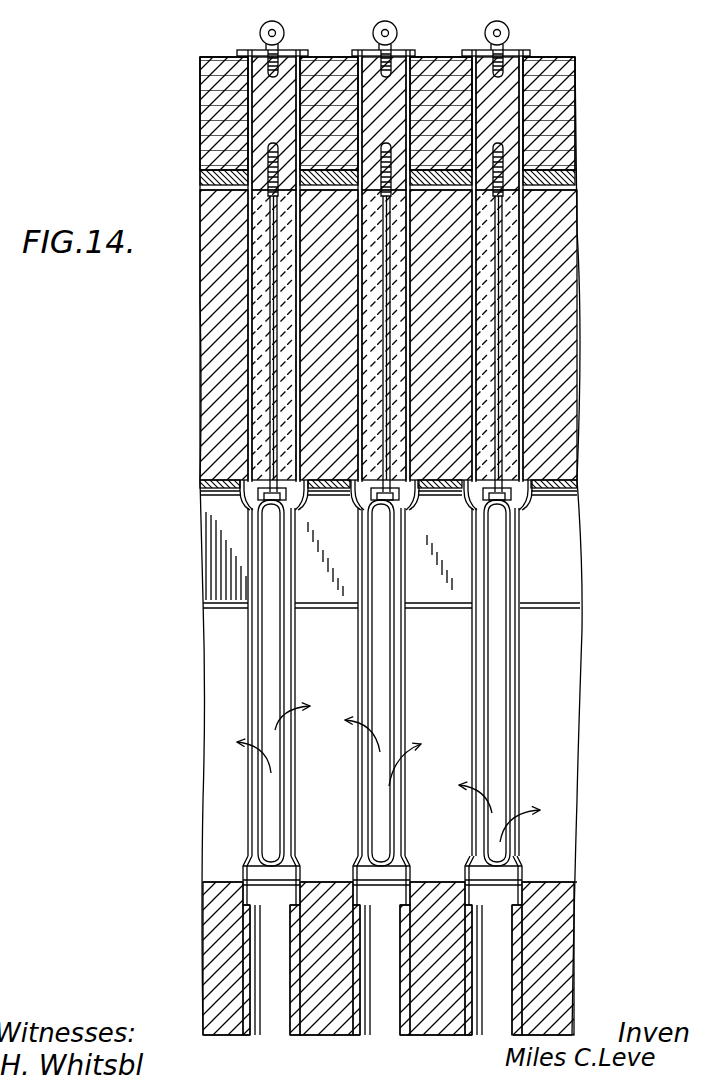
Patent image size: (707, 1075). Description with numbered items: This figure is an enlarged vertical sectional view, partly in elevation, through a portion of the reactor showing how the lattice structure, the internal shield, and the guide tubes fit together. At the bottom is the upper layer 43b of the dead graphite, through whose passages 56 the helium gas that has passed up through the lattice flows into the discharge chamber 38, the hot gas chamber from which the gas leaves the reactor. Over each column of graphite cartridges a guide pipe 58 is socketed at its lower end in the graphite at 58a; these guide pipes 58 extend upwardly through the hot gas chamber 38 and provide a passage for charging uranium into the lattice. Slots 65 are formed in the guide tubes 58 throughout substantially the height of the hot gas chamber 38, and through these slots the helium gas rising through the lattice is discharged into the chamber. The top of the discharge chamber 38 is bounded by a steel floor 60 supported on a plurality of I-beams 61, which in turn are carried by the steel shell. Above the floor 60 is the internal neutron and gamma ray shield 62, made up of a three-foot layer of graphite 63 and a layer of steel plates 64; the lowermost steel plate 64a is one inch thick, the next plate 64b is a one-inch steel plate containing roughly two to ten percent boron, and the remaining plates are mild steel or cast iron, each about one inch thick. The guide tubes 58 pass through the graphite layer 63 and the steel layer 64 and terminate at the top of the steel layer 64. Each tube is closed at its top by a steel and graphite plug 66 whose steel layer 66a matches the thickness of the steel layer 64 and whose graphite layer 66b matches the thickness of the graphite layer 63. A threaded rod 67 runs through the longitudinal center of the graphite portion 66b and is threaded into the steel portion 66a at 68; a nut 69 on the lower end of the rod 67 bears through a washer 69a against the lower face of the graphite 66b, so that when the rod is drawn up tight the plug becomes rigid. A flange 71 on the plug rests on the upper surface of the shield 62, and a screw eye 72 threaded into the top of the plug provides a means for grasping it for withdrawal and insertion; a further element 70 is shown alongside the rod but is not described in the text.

The discharge chamber 38 is at (560, 660).
The upper layer of the dead graphite 43b is at (550, 938).
The passages 56 is at (262, 955).
The guide pipe 58 is at (250, 770).
The socket 58a is at (243, 890).
The steel floor 60 is at (202, 484).
The I-beams 61 is at (213, 537).
The internal neutron and gamma ray shield 62 is at (196, 315).
The graphite layer 63 is at (558, 305).
The layer of steel plates 64 is at (565, 78).
The lowermost steel plate 64a is at (560, 191).
The boron steel plate 64b is at (570, 178).
The slots 65 is at (270, 676).
The steel and graphite plug 66 is at (282, 62).
The steel layer of the plug 66a is at (258, 110).
The graphite layer of the plug 66b is at (512, 280).
The threaded rod 67 is at (503, 402).
The threaded connection 68 is at (268, 158).
The nut 69 is at (245, 490).
The washer 69a is at (372, 492).
The sleeve 70 is at (527, 440).
The flange 71 is at (245, 50).
The screw eye 72 is at (260, 30).